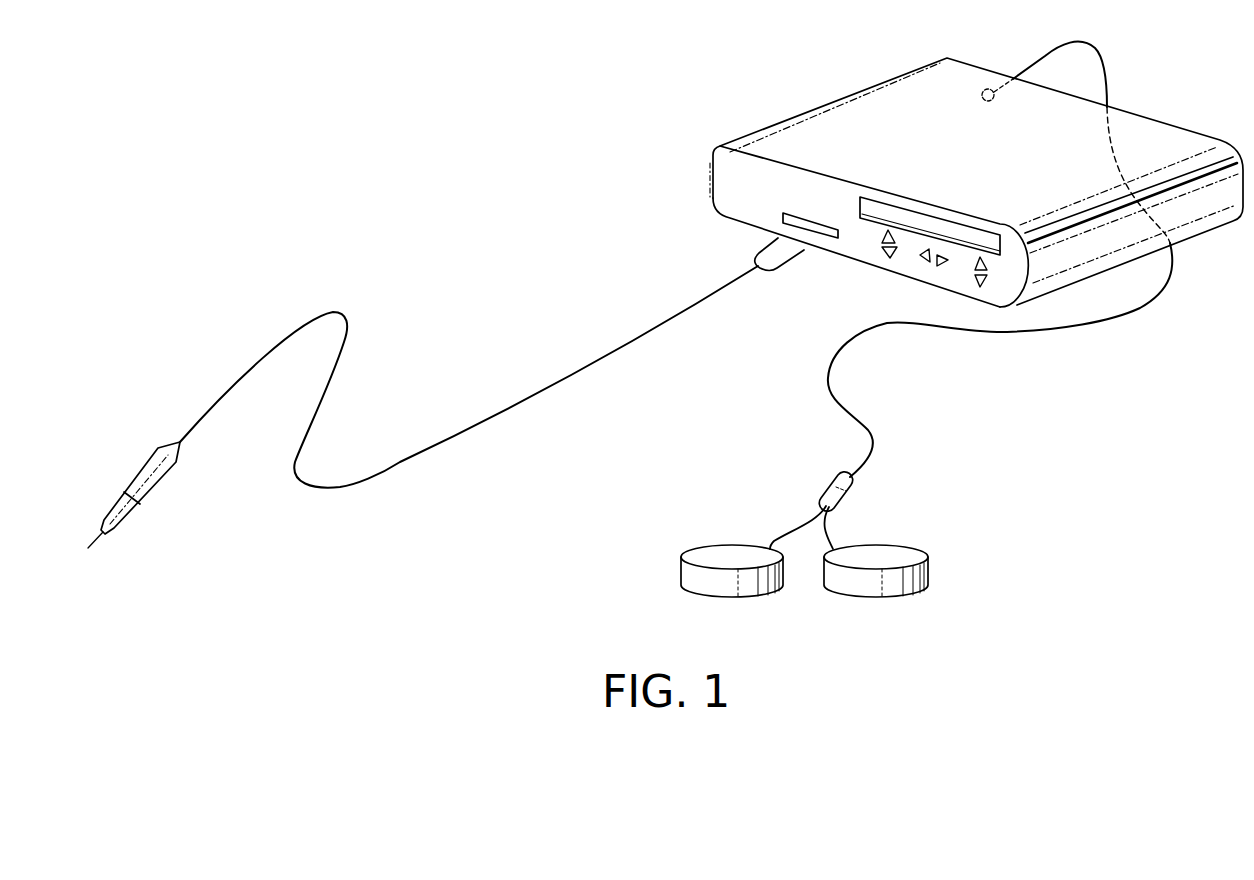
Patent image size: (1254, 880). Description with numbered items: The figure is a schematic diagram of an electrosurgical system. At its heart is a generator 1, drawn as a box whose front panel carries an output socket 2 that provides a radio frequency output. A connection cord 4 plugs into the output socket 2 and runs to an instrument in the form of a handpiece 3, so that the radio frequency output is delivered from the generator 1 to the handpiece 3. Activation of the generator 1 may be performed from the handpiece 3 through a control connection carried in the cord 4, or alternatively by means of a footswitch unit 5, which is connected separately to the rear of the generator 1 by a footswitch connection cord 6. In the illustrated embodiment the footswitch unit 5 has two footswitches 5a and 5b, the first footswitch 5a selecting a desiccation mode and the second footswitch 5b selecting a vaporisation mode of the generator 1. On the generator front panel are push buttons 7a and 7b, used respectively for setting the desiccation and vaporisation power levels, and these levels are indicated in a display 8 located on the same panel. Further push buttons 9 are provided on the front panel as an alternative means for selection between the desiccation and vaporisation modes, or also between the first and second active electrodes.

The generator 1 is at (751, 134).
The output socket 2 is at (783, 215).
The handpiece 3 is at (133, 484).
The connection cord 4 is at (560, 384).
The footswitch unit 5 is at (764, 520).
The footswitch 5a is at (737, 597).
The footswitch 5b is at (880, 597).
The footswitch connection cord 6 is at (1067, 331).
The push button 7a is at (882, 269).
The push button 7b is at (977, 296).
The display 8 is at (928, 211).
The push buttons 9 is at (926, 268).